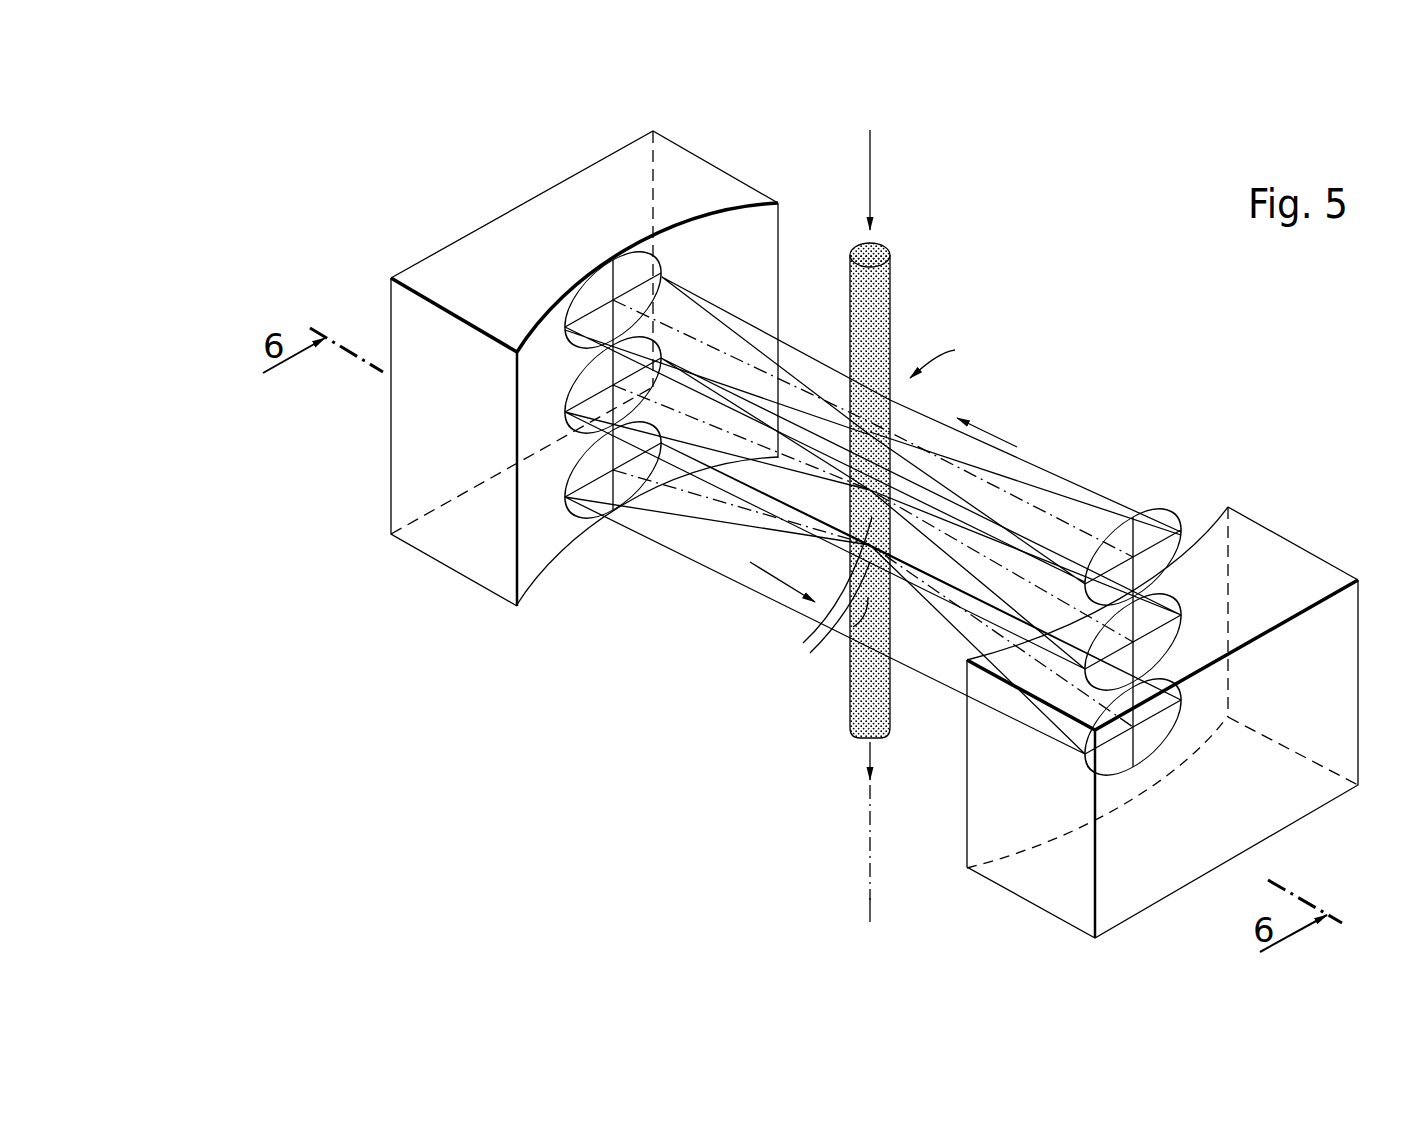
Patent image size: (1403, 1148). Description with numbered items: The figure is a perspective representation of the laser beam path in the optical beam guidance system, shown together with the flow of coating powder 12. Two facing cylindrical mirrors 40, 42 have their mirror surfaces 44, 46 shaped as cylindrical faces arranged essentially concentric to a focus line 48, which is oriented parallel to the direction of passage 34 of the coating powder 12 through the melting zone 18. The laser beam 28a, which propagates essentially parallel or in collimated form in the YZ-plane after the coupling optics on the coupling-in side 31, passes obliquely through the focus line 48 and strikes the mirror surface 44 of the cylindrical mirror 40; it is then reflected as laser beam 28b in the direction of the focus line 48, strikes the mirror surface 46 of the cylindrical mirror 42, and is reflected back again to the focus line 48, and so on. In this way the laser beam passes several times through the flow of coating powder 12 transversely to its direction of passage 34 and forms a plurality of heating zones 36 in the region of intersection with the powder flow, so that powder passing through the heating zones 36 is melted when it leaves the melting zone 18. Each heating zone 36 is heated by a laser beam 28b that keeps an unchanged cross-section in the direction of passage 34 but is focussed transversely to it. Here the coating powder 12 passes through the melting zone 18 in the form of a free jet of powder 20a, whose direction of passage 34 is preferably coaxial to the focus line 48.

The coating powder 12 is at (870, 168).
The melting zone 18 is at (948, 352).
The free jet of powder 20a is at (877, 297).
The laser beam 28a is at (1047, 465).
The laser beam 28b is at (817, 488).
The coupling-in side 31 is at (727, 245).
The direction of passage 34 is at (872, 748).
The heating zones 36 is at (827, 596).
The cylindrical mirror 40 is at (580, 382).
The cylindrical mirror 42 is at (1131, 714).
The mirror surface 44 is at (545, 545).
The mirror surface 46 is at (997, 832).
The focus line 48 is at (866, 912).